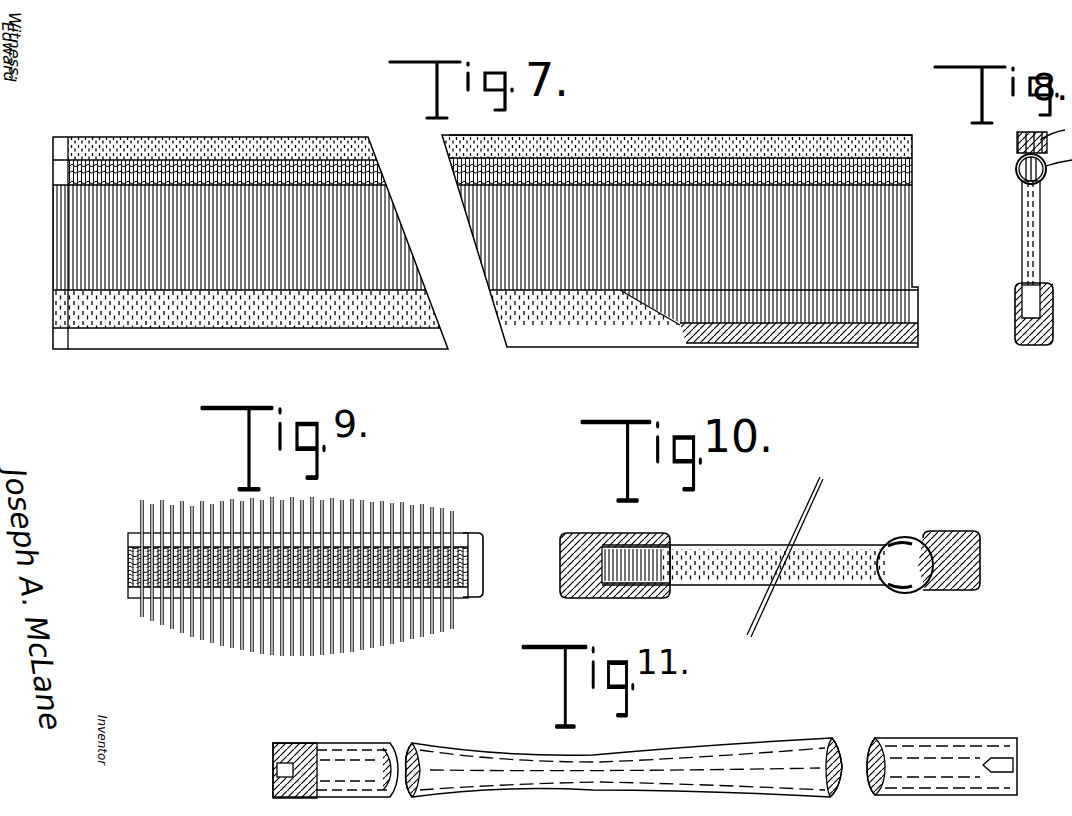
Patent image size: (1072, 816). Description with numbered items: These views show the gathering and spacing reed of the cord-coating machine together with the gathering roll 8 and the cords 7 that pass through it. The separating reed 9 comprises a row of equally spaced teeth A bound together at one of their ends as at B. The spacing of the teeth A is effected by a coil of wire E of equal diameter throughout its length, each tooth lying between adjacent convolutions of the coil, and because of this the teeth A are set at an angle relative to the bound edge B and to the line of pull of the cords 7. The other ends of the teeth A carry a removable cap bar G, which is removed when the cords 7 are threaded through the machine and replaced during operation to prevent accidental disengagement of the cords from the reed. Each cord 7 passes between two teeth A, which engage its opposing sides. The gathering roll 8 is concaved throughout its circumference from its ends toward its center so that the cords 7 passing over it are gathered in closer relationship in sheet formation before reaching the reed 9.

In FIG. 9, the strands or cords 7 is at (182, 648).
In FIG. 10, the strands or cords 7 is at (760, 612).
In FIG. 7, the gathering roll 8 is at (204, 387).
In FIG. 11, the gathering roll 8 is at (335, 752).
In FIG. 7, the separating reed 9 is at (308, 262).
In FIG. 7, the teeth A is at (808, 247).
In FIG. 8, the teeth A is at (1035, 252).
In FIG. 9, the teeth A is at (482, 558).
In FIG. 10, the teeth A is at (695, 548).
In FIG. 7, the bound end B is at (876, 135).
In FIG. 10, the bound end B is at (912, 540).
In FIG. 7, the coil of wire E is at (900, 172).
In FIG. 10, the coil of wire E is at (895, 547).
In FIG. 7, the removable cap bar G is at (905, 334).
In FIG. 9, the removable cap bar G is at (482, 532).
In FIG. 10, the removable cap bar G is at (670, 545).